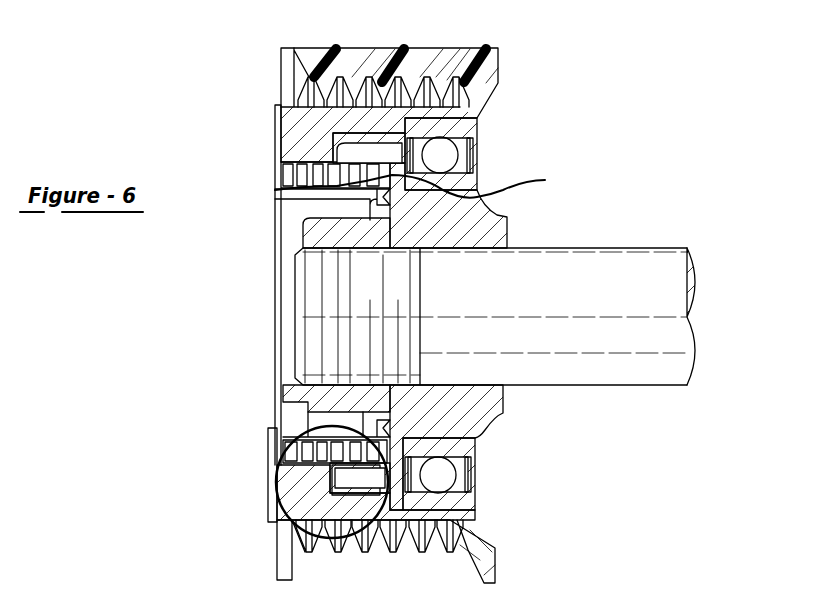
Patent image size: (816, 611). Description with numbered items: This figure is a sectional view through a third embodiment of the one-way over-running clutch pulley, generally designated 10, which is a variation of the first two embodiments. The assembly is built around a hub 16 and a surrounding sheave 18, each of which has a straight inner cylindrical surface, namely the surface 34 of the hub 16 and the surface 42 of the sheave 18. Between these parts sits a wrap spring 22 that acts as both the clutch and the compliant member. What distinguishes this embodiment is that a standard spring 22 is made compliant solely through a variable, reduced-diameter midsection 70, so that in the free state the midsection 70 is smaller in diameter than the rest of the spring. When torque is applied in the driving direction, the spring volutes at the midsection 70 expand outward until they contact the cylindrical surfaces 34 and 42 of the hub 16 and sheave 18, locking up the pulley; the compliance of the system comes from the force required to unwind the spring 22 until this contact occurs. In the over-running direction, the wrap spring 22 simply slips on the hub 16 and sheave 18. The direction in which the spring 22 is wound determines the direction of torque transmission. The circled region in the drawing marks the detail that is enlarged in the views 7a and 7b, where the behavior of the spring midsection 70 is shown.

The one-way over-running clutch pulley 10 is at (527, 82).
The sheave 18 is at (277, 78).
The wrap spring 22 is at (275, 190).
The hub 16 is at (466, 256).
The inner cylindrical surface 34 is at (378, 455).
The inner cylindrical surface 42 is at (283, 440).
The variable diameter midsection 70 is at (422, 184).
The detail view circle 7a is at (276, 482).
The detail view circle 7b is at (276, 502).